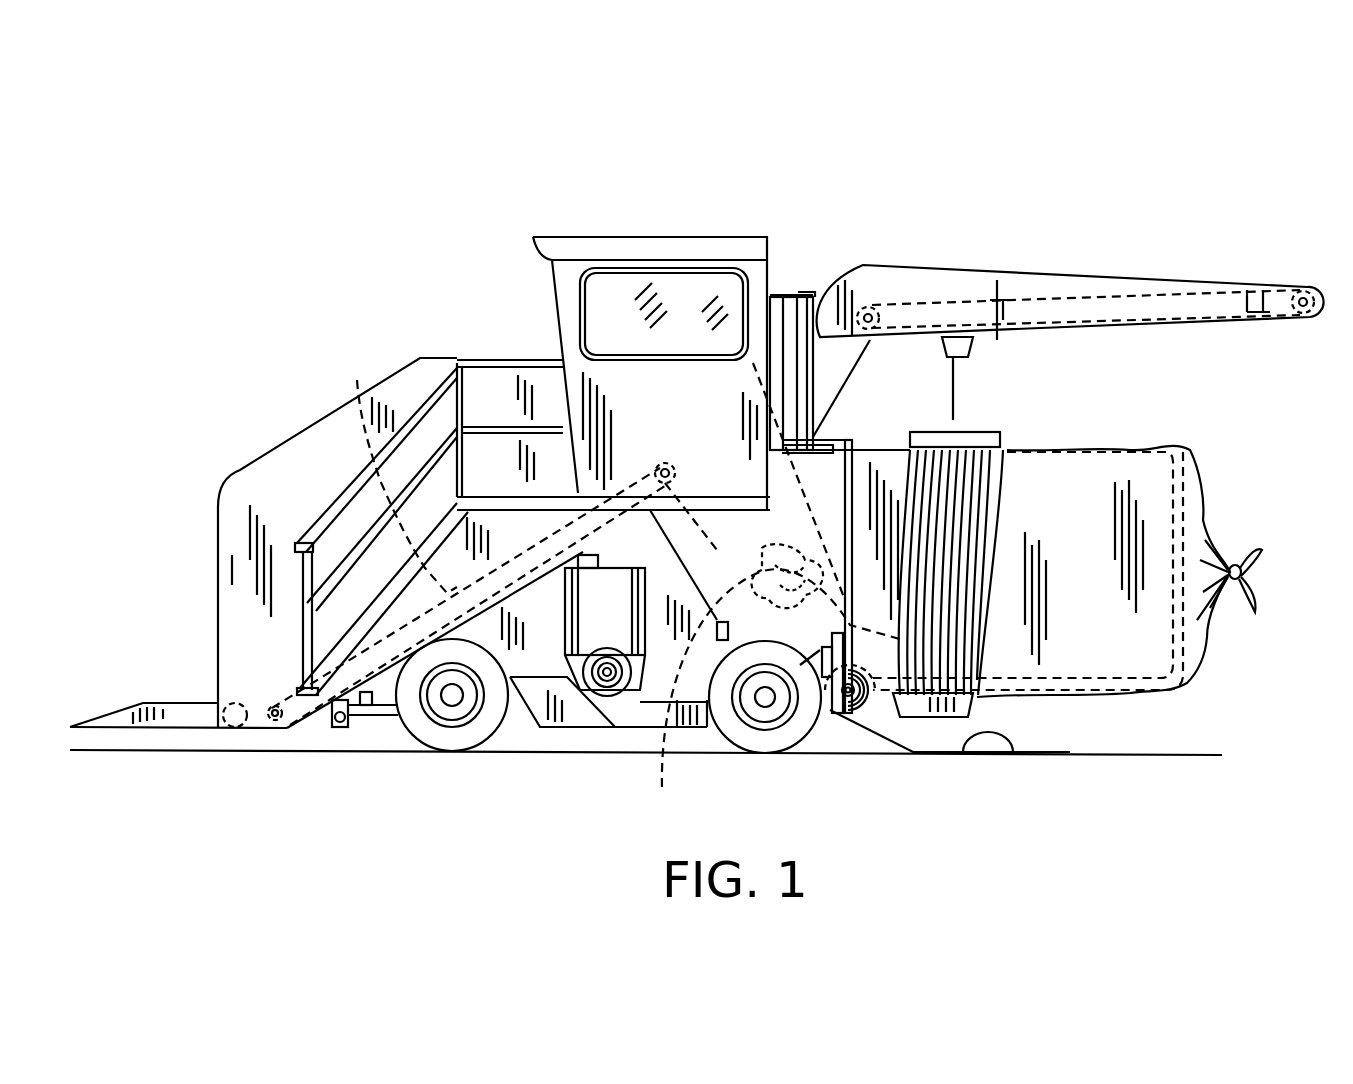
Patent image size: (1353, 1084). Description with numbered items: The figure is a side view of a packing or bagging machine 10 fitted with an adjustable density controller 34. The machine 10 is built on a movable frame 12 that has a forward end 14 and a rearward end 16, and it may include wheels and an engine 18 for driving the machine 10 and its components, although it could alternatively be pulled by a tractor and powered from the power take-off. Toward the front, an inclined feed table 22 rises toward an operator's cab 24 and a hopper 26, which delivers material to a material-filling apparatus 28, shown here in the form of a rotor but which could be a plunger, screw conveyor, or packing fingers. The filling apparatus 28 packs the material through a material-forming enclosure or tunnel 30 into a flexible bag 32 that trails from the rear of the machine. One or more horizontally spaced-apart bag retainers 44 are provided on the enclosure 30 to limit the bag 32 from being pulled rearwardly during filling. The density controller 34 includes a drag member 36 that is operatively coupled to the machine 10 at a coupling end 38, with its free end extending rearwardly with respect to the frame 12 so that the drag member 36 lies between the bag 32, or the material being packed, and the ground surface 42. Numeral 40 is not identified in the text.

The packing machine 10 is at (762, 213).
The movable frame 12 is at (452, 748).
The forward end 14 is at (190, 657).
The rearward end 16 is at (983, 403).
The engine 18 is at (626, 612).
The inclined feed table 22 is at (532, 525).
The operator's cab 24 is at (767, 267).
The hopper 26 is at (737, 530).
The material-filling apparatus 28 is at (774, 594).
The material-forming enclosure 30 is at (883, 467).
The flexible bag 32 is at (990, 505).
The density controller 34 is at (862, 733).
The drag member 36 is at (1000, 736).
The coupling end 38 is at (832, 717).
The bag 40 is at (1067, 753).
The ground surface 42 is at (1153, 758).
The bag retainers 44 is at (930, 707).